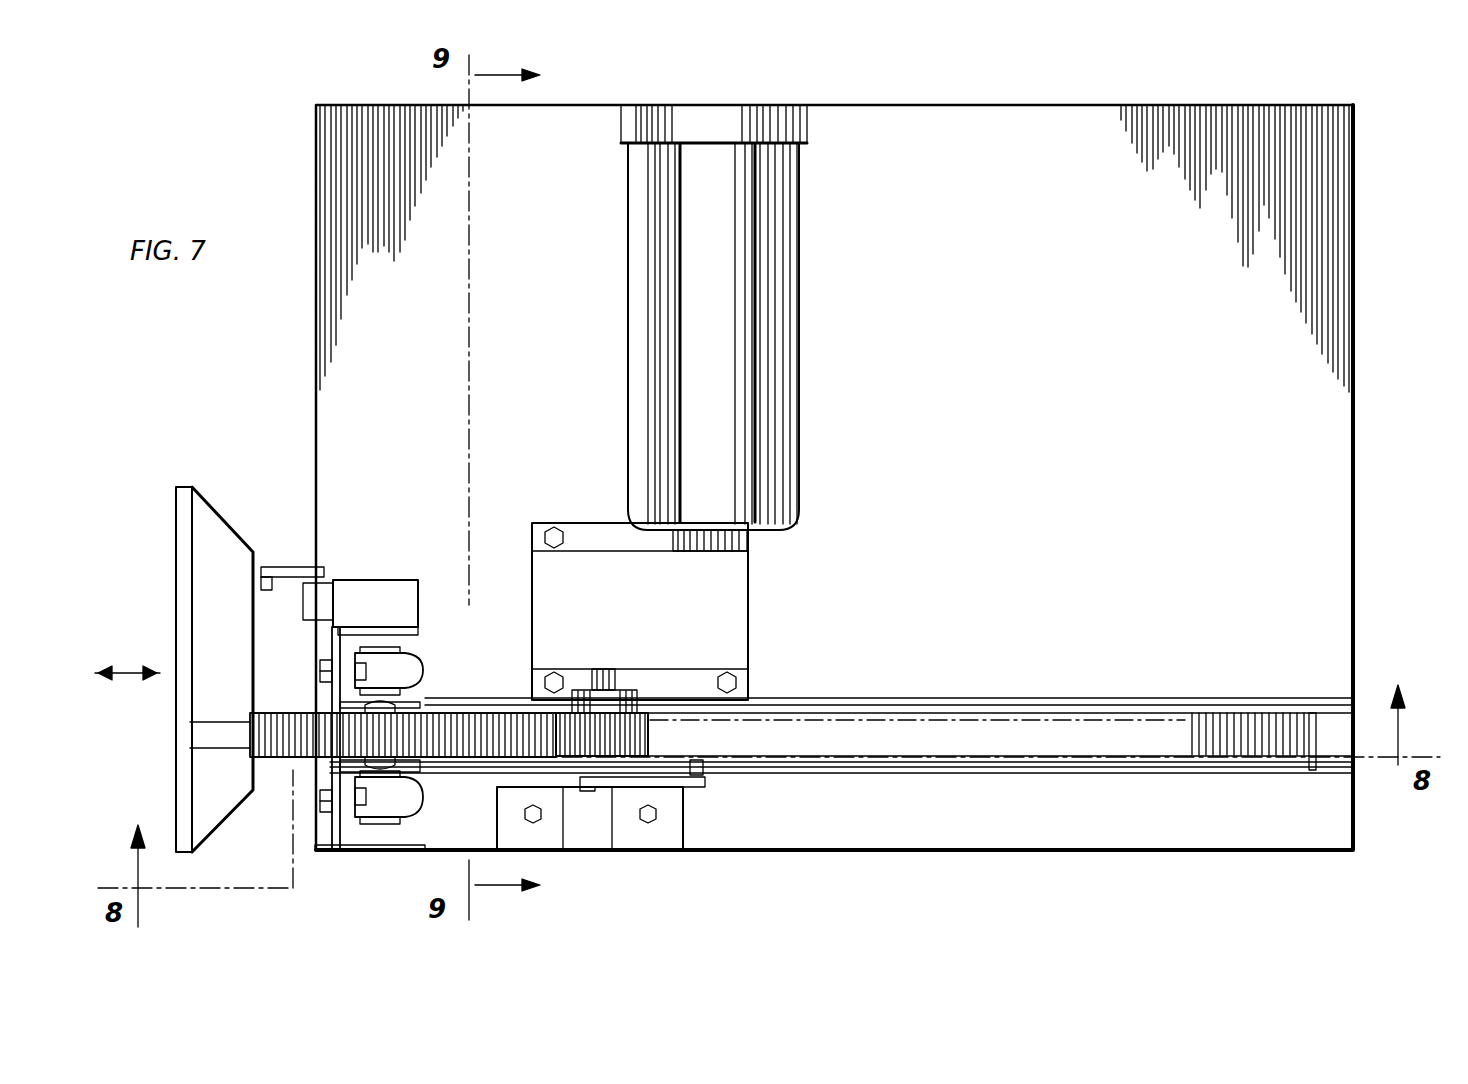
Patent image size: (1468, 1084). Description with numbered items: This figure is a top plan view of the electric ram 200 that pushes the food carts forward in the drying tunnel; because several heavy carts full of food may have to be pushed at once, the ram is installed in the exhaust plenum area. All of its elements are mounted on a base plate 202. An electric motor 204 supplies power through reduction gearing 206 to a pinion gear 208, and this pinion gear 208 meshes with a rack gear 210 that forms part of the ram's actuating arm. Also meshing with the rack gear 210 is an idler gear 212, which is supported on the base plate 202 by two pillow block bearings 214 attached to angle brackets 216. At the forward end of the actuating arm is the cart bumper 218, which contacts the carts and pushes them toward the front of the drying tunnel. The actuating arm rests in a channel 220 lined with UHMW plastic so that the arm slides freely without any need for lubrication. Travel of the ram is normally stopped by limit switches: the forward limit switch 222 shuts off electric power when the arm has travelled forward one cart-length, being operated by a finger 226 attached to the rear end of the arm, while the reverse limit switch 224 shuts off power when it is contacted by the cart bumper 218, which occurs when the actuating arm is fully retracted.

The electric ram 200 is at (273, 480).
The base plate 202 is at (970, 118).
The electric motor 204 is at (778, 297).
The reduction gearing 206 is at (736, 614).
The pinion gear 208 is at (555, 735).
The rack gear 210 is at (873, 722).
The idler gear 212 is at (357, 737).
The pillow block bearings 214 is at (422, 672).
The angle brackets 216 is at (340, 653).
The cart bumper 218 is at (185, 582).
The channel 220 is at (938, 773).
The forward limit switch 222 is at (593, 830).
The reverse limit switch 224 is at (368, 585).
The finger 226 is at (1306, 770).